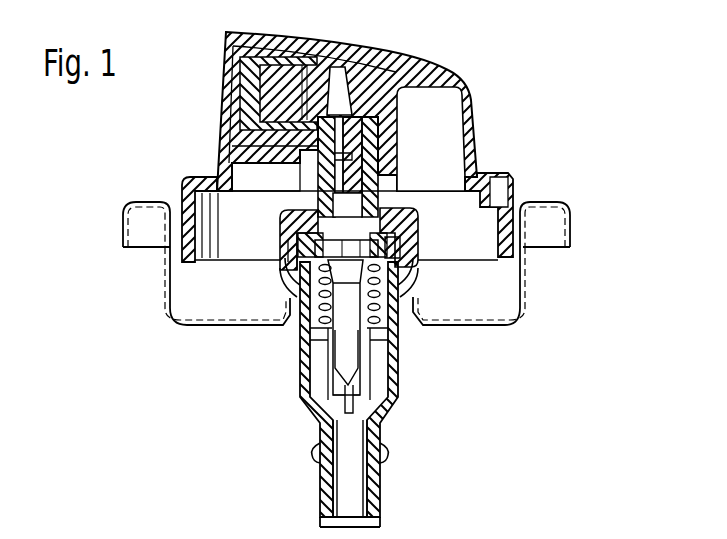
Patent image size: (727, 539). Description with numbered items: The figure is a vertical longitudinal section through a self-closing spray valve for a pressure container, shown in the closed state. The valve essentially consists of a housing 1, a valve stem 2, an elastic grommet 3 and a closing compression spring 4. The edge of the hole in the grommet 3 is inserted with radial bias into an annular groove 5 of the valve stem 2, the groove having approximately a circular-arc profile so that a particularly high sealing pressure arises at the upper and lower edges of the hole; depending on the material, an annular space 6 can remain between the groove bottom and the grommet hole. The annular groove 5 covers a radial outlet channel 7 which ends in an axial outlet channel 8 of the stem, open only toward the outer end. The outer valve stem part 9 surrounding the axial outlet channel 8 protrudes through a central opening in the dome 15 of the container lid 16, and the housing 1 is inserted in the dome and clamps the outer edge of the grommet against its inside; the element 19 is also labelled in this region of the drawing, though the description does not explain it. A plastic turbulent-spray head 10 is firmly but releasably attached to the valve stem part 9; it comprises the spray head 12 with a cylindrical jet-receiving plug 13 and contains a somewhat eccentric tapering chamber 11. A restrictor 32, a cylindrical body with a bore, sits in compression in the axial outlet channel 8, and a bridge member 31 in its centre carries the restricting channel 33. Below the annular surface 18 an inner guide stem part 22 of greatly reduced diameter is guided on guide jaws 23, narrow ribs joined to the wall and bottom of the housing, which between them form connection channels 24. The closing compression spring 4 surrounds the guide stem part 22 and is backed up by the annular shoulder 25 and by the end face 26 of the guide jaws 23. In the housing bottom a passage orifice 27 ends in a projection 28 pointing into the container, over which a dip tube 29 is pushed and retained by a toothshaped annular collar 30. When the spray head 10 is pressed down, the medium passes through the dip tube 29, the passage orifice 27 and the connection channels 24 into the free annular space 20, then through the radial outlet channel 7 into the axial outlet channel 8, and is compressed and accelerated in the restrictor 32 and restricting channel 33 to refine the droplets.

The housing 1 is at (300, 355).
The valve stem 2 is at (383, 203).
The elastic grommet 3 is at (367, 208).
The closing compression spring 4 is at (400, 325).
The annular groove 5 is at (393, 228).
The annular space 6 is at (310, 210).
The radial outlet channel 7 is at (283, 227).
The axial outlet channel 8 is at (347, 128).
The valve stem part 9 is at (362, 137).
The turbulent-spray head 10 is at (470, 90).
The tapering chamber 11 is at (340, 87).
The spray head 12 is at (245, 60).
The jet-receiving plug 13 is at (262, 97).
The dome 15 is at (387, 250).
The container lid 16 is at (570, 227).
The annular surface 18 is at (297, 277).
The piston lip 19 is at (285, 248).
The free annular space 20 is at (403, 263).
The inner guide stem part 22 is at (350, 355).
The guide jaws 23 is at (320, 378).
The connection channels 24 is at (363, 385).
The annular shoulder 25 is at (400, 280).
The end face 26 is at (300, 330).
The passage orifice 27 is at (353, 477).
The projection 28 is at (380, 493).
The dip tube 29 is at (320, 500).
The toothshaped annular collar 30 is at (313, 455).
The bridge member 31 is at (297, 170).
The restrictor 32 is at (232, 146).
The restricting channel 33 is at (378, 157).